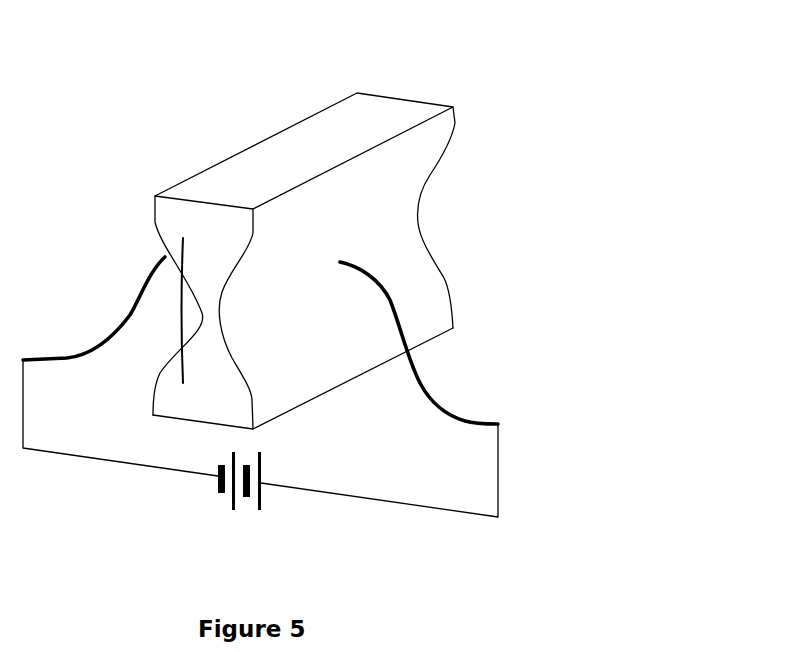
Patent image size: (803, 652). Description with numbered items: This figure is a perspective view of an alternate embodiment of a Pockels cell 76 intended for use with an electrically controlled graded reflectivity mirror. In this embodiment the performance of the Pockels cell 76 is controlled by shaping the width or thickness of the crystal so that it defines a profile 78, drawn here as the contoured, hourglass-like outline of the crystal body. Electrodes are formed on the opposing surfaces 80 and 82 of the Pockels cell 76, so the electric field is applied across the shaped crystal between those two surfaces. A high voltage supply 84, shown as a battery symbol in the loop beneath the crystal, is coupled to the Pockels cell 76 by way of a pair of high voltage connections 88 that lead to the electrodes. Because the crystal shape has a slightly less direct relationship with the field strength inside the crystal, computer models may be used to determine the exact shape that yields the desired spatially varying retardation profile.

The Pockels cell 76 is at (522, 60).
The profile 78 is at (163, 252).
The opposing surface 80 is at (420, 218).
The opposing surface 82 is at (185, 255).
The high voltage supply 84 is at (260, 510).
The high voltage connections 88 is at (430, 390).